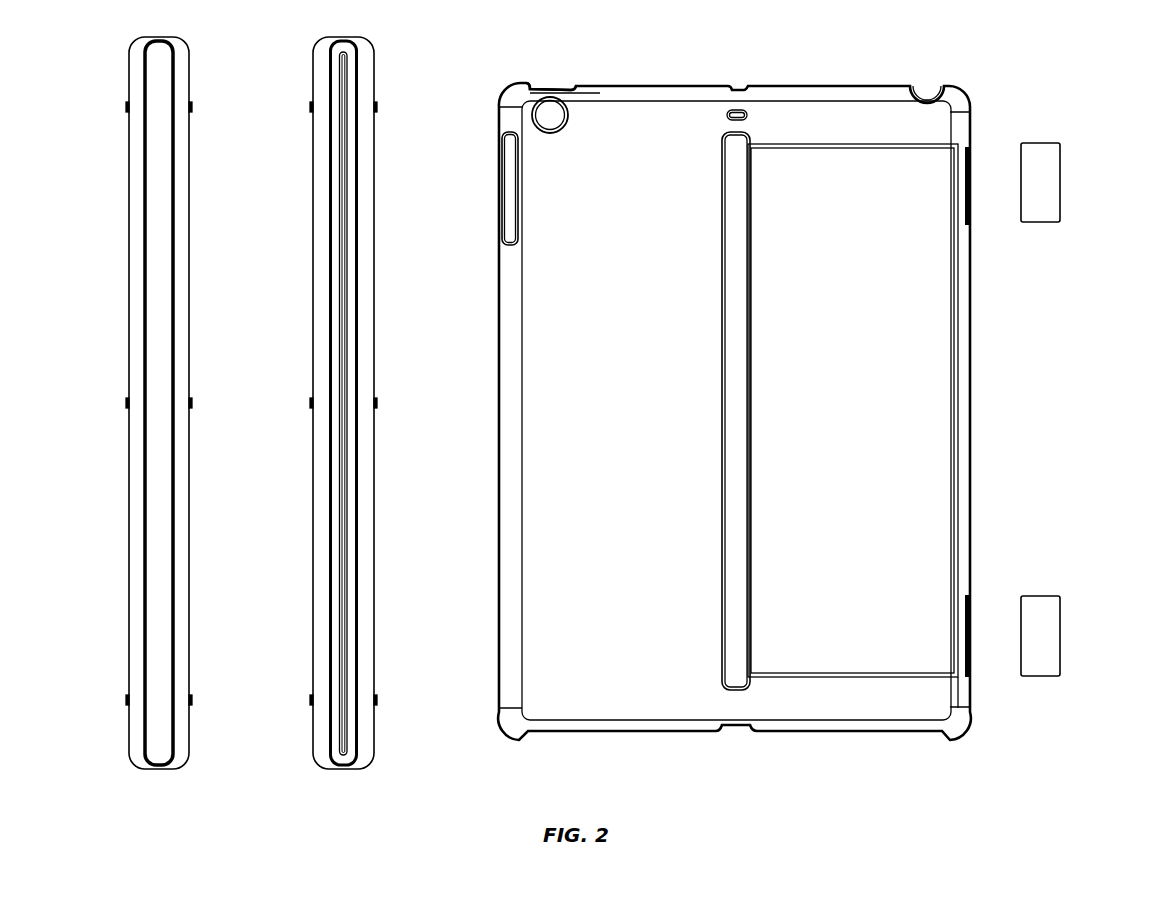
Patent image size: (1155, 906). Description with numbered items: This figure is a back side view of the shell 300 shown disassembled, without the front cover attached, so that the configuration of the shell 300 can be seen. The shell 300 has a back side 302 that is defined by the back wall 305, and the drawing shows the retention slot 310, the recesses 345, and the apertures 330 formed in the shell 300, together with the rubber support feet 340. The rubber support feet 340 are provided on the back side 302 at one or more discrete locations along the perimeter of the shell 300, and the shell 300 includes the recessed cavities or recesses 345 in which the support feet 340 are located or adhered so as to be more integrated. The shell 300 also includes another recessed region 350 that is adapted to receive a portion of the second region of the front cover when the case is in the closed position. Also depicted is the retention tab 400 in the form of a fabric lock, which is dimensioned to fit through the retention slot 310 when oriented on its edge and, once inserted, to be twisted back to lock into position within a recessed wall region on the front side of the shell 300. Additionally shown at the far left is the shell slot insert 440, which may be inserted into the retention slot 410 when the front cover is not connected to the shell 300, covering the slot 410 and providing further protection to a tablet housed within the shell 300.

The shell 300 is at (747, 383).
The back side 302 is at (565, 278).
The back wall 305 is at (593, 93).
The retention slot 310 is at (740, 148).
The apertures 330 is at (926, 94).
The rubber support feet 340 is at (1060, 180).
The recesses 345 is at (971, 192).
The recessed region 350 is at (905, 450).
The retention tab 400 is at (334, 403).
The retention slot 410 is at (347, 732).
The shell slot insert 440 is at (158, 743).